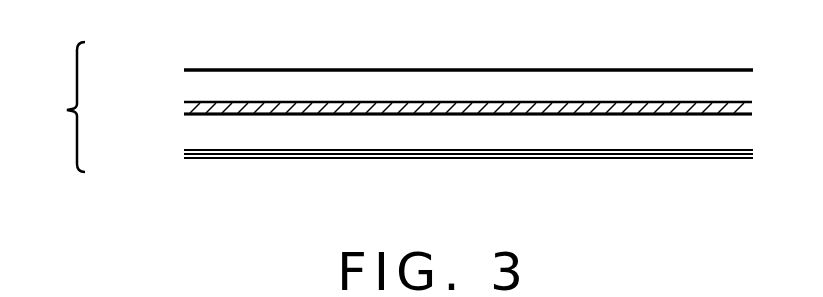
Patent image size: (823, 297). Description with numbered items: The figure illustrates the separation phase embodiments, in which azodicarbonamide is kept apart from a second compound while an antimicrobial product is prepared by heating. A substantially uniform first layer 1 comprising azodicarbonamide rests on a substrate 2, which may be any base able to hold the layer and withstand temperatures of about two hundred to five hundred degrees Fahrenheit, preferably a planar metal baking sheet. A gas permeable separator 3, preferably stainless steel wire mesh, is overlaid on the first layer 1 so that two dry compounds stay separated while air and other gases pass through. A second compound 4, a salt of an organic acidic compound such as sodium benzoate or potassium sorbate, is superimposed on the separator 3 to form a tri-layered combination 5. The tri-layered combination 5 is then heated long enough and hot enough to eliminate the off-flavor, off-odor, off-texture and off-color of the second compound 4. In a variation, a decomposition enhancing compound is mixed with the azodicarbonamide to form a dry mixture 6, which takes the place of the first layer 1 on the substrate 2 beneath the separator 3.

The first layer 1 is at (207, 133).
The substrate 2 is at (258, 160).
The separator 3 is at (753, 106).
The second compound 4 is at (348, 83).
The tri-layered combination 5 is at (399, 107).
The dry mixture 6 is at (207, 133).